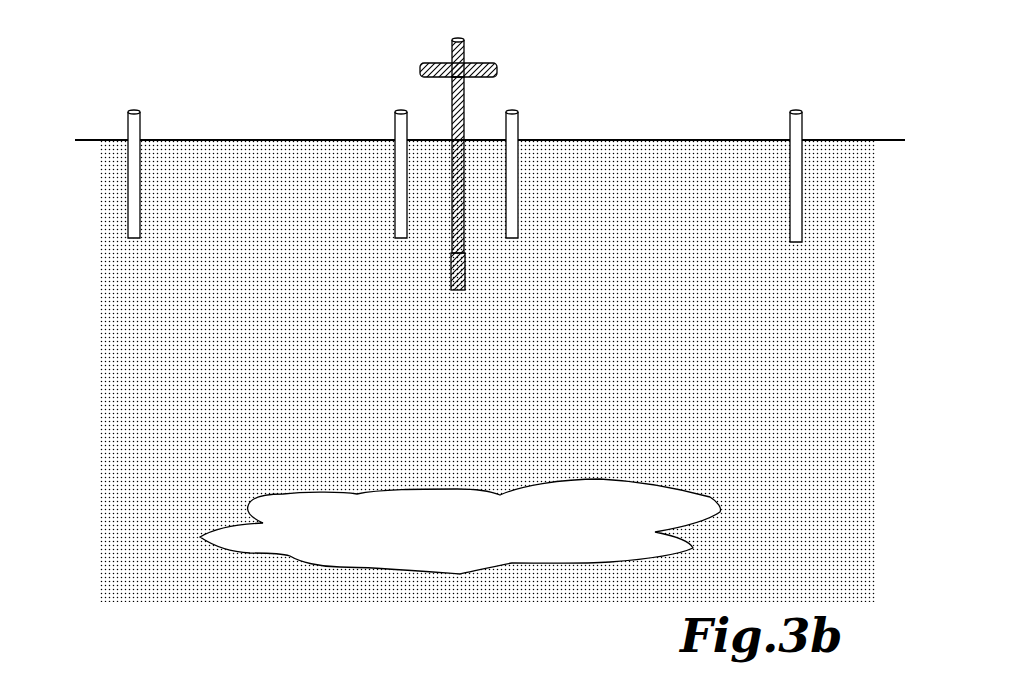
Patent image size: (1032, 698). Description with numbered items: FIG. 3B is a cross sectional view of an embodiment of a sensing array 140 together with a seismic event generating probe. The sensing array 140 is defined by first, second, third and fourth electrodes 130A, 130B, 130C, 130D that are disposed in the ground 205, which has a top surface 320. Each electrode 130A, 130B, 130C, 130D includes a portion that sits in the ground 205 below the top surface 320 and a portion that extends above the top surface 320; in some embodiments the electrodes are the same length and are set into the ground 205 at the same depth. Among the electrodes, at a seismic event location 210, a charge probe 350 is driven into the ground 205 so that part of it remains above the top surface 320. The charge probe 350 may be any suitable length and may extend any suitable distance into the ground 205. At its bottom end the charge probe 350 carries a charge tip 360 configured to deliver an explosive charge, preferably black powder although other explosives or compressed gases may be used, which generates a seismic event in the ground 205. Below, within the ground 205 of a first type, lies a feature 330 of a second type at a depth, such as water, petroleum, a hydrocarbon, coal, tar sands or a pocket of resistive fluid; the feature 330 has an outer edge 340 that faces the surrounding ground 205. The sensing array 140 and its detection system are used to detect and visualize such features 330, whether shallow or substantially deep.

The sensing array 140 is at (275, 68).
The ground 205 is at (650, 204).
The seismic event location 210 is at (432, 112).
The top surface 320 is at (662, 138).
The charge probe 350 is at (465, 60).
The charge tip 360 is at (452, 278).
The first electrode 130A is at (125, 213).
The second electrode 130B is at (392, 215).
The third electrode 130C is at (520, 215).
The fourth electrode 130D is at (805, 205).
The feature 330 is at (298, 517).
The outer edge 340 is at (705, 492).